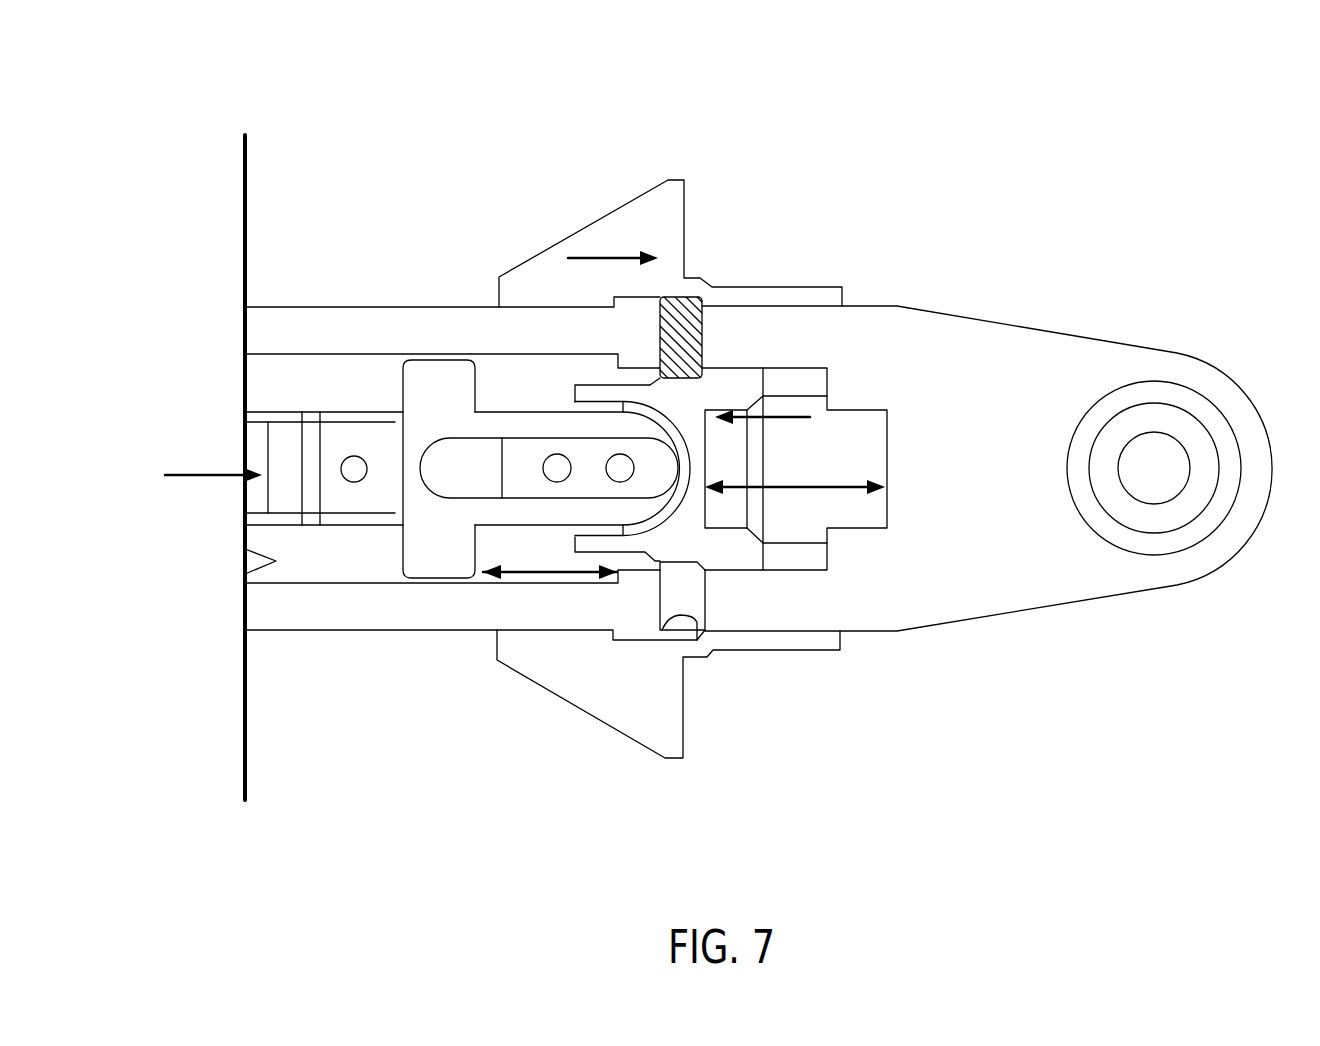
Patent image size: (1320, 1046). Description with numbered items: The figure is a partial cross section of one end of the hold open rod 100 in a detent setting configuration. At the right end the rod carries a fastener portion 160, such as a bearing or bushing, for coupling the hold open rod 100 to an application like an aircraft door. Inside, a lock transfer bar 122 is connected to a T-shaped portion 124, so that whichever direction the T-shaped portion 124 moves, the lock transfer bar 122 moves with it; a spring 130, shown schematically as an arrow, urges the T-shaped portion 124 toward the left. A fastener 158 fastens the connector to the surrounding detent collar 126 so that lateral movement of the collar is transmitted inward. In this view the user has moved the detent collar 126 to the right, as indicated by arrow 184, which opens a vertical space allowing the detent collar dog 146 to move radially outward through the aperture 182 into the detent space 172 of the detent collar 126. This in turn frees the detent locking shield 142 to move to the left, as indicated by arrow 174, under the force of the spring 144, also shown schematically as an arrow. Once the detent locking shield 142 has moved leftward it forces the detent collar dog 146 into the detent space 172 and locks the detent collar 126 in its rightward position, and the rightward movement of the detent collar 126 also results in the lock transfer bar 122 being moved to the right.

The hold open rod 100 is at (884, 125).
The lock transfer bar 122 is at (265, 422).
The T-shaped portion 124 is at (443, 562).
The detent collar 126 is at (607, 233).
The spring 130 is at (586, 574).
The detent locking shield 142 is at (733, 378).
The spring 144 is at (764, 432).
The detent collar dog 146 is at (673, 330).
The fastener 158 is at (553, 478).
The fastener portion 160 is at (1153, 424).
The detent space 172 is at (674, 297).
The arrow 174 is at (798, 416).
The aperture 182 is at (698, 340).
The arrow 184 is at (592, 258).